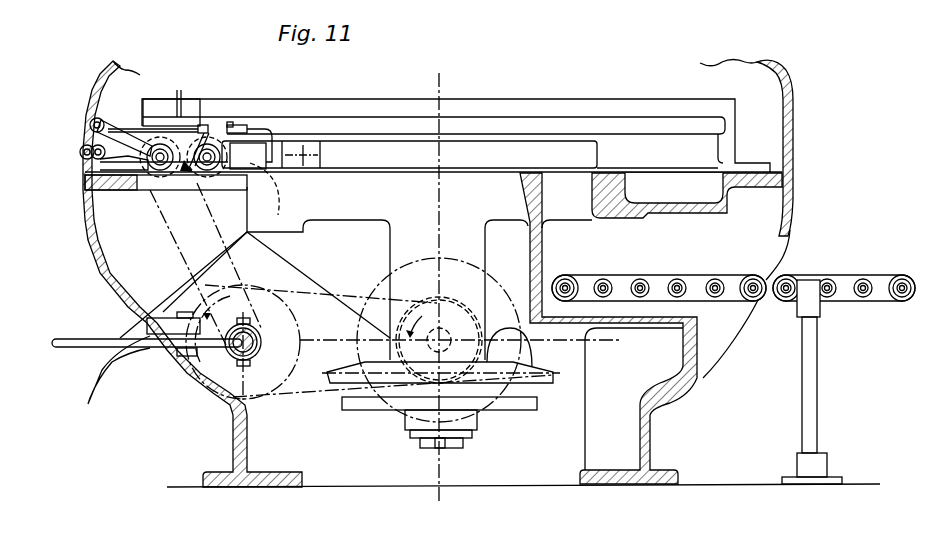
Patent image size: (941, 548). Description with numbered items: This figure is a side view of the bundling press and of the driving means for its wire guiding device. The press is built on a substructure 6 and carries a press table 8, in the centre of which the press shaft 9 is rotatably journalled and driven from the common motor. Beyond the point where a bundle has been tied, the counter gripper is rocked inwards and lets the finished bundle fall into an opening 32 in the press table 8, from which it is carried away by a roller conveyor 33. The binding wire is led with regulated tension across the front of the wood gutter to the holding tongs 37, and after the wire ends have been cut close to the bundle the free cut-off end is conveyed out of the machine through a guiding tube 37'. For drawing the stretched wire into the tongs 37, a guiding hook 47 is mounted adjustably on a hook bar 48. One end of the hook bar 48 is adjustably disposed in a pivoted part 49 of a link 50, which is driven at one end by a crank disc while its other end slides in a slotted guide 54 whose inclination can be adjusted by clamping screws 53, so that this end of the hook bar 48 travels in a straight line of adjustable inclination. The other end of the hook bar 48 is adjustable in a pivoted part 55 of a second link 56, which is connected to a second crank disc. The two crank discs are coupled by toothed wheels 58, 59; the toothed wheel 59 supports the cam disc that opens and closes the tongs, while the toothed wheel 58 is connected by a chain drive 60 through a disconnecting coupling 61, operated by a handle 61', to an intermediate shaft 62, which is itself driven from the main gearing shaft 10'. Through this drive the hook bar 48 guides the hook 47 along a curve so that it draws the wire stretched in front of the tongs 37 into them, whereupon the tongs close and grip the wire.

The substructure 6 is at (88, 246).
The press table 8 is at (84, 200).
The press shaft 9 is at (452, 440).
The main gearing shaft 10' is at (439, 340).
The opening 32 is at (576, 213).
The roller conveyor 33 is at (760, 293).
The holding tongs 37 is at (275, 172).
The guiding tube 37' is at (95, 370).
The guiding hook 47 is at (250, 128).
The hook bar 48 is at (185, 128).
The pivoted part 49 is at (110, 128).
The link 50 is at (81, 150).
The clamping screws 53 is at (85, 160).
The slotted guide 54 is at (104, 119).
The pivoted part 55 is at (206, 128).
The link 56 is at (188, 172).
The toothed wheel 58 is at (157, 172).
The toothed wheel 59 is at (212, 172).
The chain drive 60 is at (163, 213).
The disconnecting coupling 61 is at (243, 342).
The handle 61' is at (147, 332).
The intermediate shaft 62 is at (258, 348).